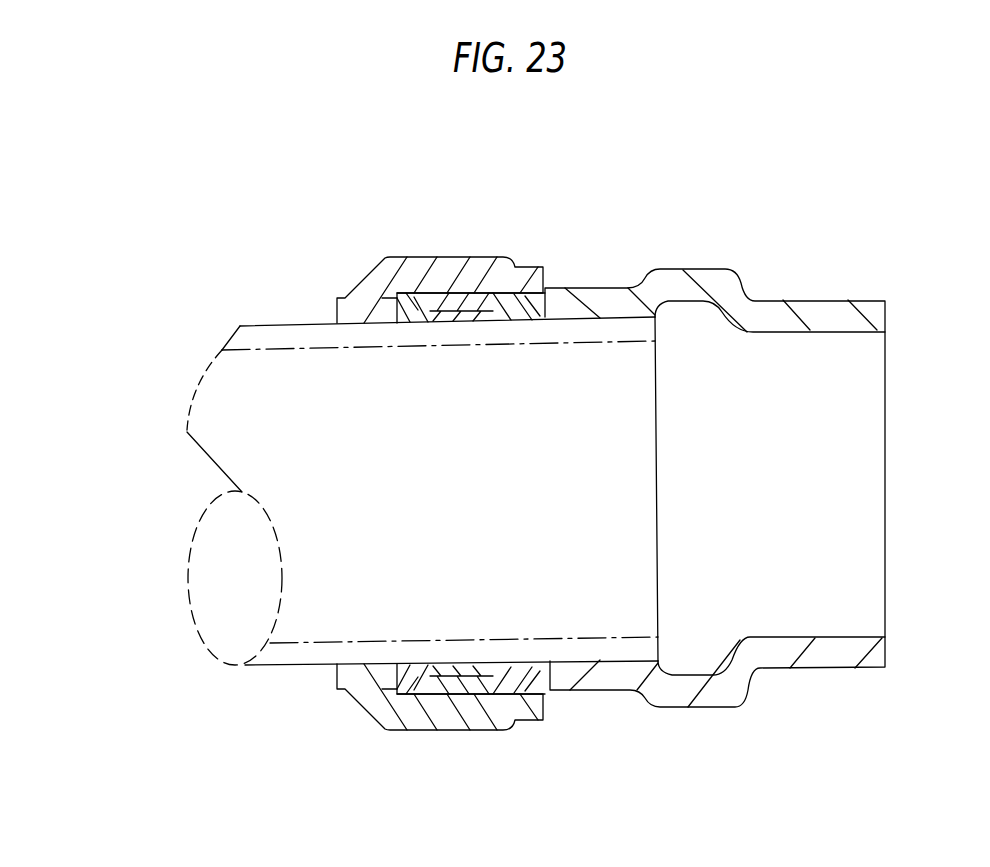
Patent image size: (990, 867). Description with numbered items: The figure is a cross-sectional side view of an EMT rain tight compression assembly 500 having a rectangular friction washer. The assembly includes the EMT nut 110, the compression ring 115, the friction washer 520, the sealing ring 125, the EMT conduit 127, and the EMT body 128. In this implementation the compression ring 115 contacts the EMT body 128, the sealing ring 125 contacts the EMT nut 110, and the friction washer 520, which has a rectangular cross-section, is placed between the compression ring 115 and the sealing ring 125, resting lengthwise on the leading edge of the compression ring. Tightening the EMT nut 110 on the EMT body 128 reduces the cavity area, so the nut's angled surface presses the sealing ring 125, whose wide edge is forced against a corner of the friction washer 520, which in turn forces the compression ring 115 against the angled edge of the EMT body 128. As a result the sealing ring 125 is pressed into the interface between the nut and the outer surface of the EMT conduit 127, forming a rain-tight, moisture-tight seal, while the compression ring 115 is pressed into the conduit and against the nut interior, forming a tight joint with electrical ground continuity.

The EMT rain tight compression assembly 500 is at (313, 187).
The EMT conduit 127 is at (268, 325).
The EMT body 128 is at (887, 390).
The EMT nut 110 is at (407, 256).
The friction washer 520 is at (430, 285).
The compression ring 115 is at (487, 286).
The sealing ring 125 is at (381, 682).